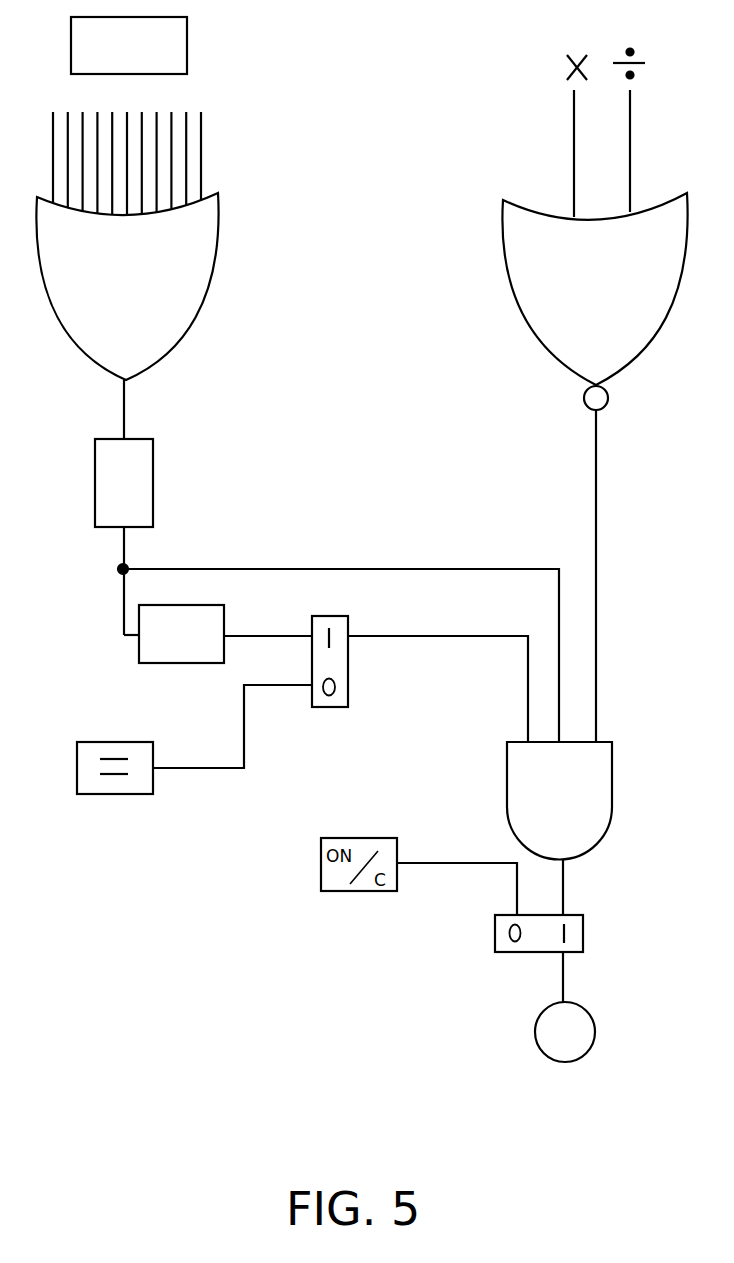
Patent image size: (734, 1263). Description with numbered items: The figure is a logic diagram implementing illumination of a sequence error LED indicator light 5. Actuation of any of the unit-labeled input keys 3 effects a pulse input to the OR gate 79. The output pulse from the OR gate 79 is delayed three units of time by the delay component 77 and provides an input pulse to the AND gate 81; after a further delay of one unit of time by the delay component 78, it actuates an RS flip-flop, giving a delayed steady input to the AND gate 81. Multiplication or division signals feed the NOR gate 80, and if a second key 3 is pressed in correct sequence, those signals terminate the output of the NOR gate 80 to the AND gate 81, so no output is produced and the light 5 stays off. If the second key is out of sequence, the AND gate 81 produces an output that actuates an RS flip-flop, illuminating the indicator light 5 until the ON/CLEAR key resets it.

The unit-labeled input keys 3 is at (187, 33).
The sequence error LED indicator light 5 is at (595, 1025).
The delay component 77 is at (124, 507).
The delay component 78 is at (181, 634).
The OR gate 79 is at (127, 246).
The NOR gate 80 is at (594, 396).
The AND gate 81 is at (559, 801).